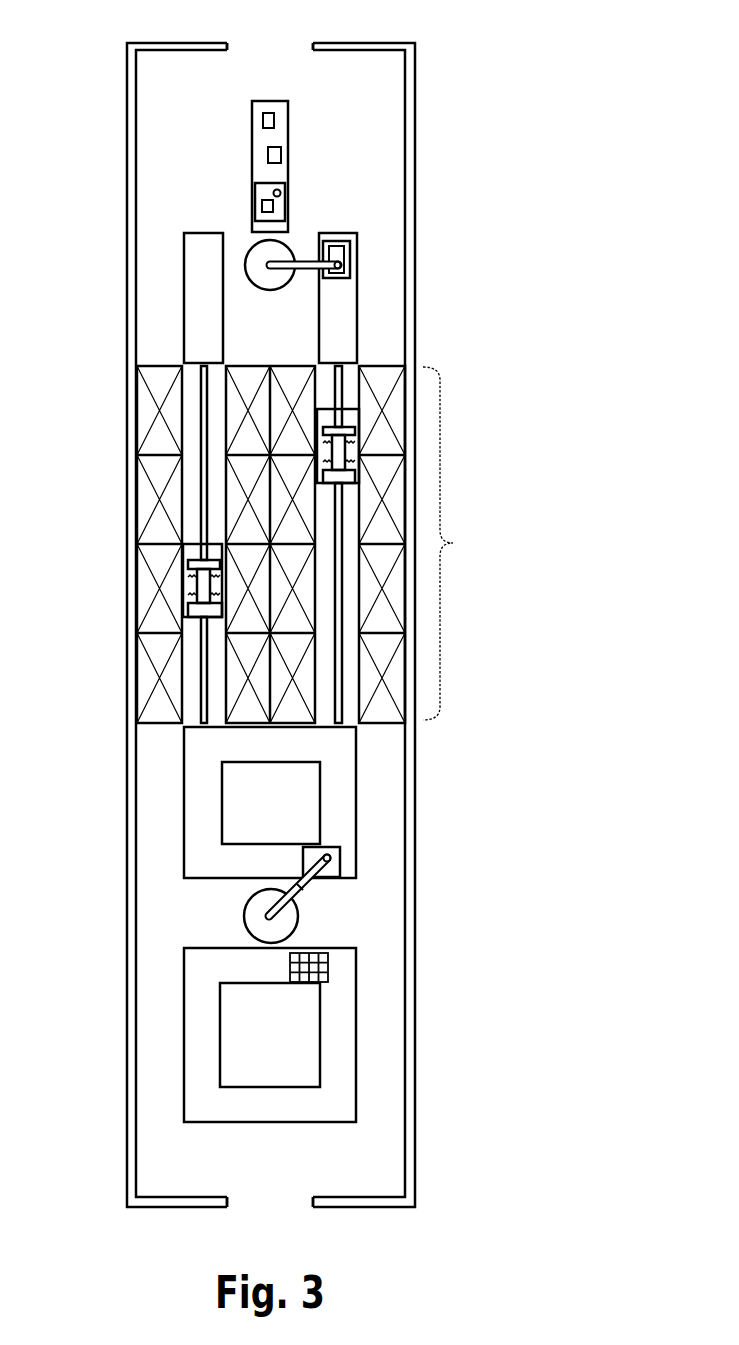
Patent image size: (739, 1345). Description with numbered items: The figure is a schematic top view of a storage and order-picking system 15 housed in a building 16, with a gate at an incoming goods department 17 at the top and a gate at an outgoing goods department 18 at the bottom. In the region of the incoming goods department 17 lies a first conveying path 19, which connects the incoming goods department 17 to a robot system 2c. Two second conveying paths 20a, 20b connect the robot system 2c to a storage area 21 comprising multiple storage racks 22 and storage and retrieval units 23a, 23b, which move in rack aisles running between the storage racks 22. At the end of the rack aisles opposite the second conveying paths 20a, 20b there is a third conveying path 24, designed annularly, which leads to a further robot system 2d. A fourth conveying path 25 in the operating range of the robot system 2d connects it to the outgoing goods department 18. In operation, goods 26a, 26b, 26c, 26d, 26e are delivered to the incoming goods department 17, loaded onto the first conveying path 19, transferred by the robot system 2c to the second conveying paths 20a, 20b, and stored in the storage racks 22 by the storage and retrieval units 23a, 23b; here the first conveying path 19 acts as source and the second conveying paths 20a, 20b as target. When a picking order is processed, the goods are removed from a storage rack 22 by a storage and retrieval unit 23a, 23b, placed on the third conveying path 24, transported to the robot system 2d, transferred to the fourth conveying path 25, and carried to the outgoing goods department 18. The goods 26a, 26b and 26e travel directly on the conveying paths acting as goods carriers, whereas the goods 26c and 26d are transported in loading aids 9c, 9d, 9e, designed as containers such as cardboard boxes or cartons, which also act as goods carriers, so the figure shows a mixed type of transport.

The storage and order-picking system 15 is at (514, 367).
The building 16 is at (127, 836).
The incoming goods department 17 is at (289, 38).
The outgoing goods department 18 is at (282, 1209).
The first conveying path 19 is at (279, 115).
The goods 26a is at (263, 120).
The goods 26b is at (283, 157).
The goods 26c is at (288, 190).
The goods 26d is at (256, 207).
The goods 26e is at (328, 968).
The loading aid 9c is at (257, 185).
The loading aid 9d is at (355, 245).
The loading aid 9e is at (333, 868).
The second conveying path 20a is at (198, 300).
The second conveying path 20b is at (335, 323).
The robot system 2c is at (268, 280).
The robot system 2d is at (253, 920).
The storage area 21 is at (272, 514).
The storage racks 22 is at (147, 407).
The storage and retrieval unit 23a is at (200, 552).
The storage and retrieval unit 23b is at (347, 418).
The third conveying path 24 is at (338, 790).
The fourth conveying path 25 is at (338, 1052).